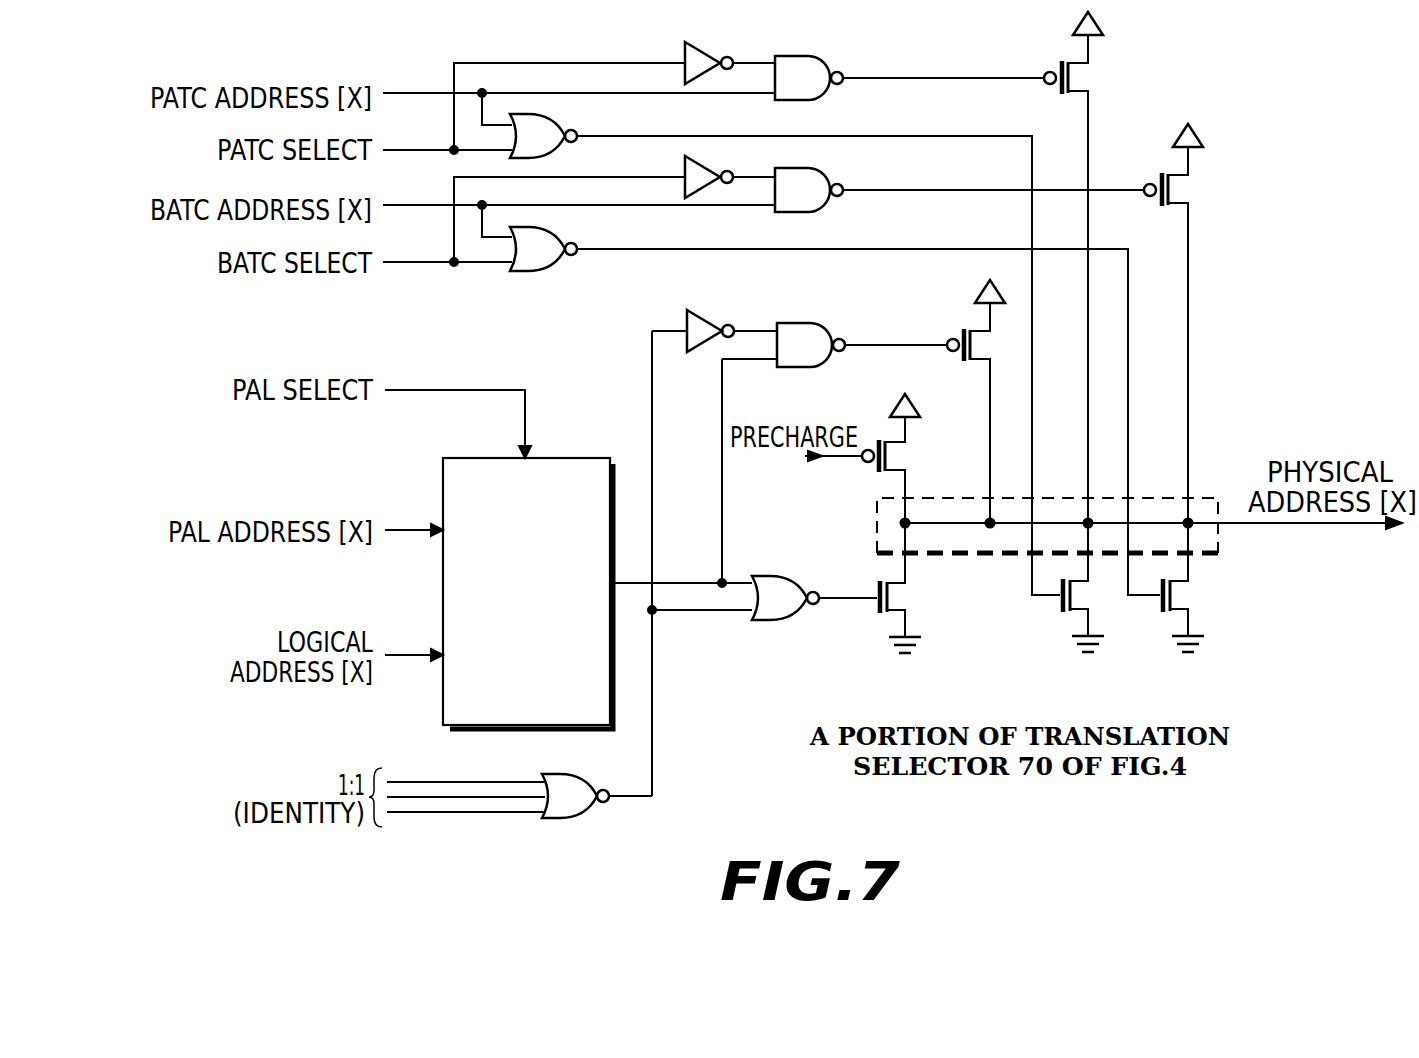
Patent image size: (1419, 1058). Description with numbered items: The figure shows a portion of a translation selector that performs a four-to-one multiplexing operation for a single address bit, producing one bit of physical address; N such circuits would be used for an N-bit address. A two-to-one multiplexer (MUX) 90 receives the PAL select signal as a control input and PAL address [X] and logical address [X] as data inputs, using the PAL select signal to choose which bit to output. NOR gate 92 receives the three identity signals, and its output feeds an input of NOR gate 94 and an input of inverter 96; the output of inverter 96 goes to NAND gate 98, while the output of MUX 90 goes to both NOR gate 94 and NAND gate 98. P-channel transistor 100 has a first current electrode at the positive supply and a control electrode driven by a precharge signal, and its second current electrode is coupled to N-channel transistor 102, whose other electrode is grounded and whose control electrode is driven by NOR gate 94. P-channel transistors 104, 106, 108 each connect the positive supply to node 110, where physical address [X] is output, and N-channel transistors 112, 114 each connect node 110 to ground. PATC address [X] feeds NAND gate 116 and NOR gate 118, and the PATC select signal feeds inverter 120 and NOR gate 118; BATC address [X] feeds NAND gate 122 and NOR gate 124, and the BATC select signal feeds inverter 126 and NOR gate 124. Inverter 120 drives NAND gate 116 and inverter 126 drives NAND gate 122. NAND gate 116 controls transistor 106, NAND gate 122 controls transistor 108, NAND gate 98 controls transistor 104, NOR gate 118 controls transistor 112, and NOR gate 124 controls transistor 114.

The 2:1 multiplexer (MUX) 90 is at (553, 683).
The NOR gate 92 is at (556, 809).
The NOR gate 94 is at (766, 611).
The inverter 96 is at (702, 314).
The NAND gate 98 is at (789, 358).
The P-channel CMOS transistor 100 is at (880, 474).
The N-channel CMOS transistor 102 is at (880, 616).
The P-channel CMOS transistor 104 is at (964, 330).
The P-channel CMOS transistor 106 is at (1060, 62).
The P-channel CMOS transistor 108 is at (1160, 174).
The node 110 is at (1197, 556).
The N-channel CMOS transistor 112 is at (1063, 614).
The N-channel CMOS transistor 114 is at (1163, 614).
The NAND gate 116 is at (784, 91).
The NOR gate 118 is at (519, 149).
The inverter 120 is at (705, 46).
The NAND gate 122 is at (784, 203).
The NOR gate 124 is at (519, 262).
The inverter 126 is at (705, 160).